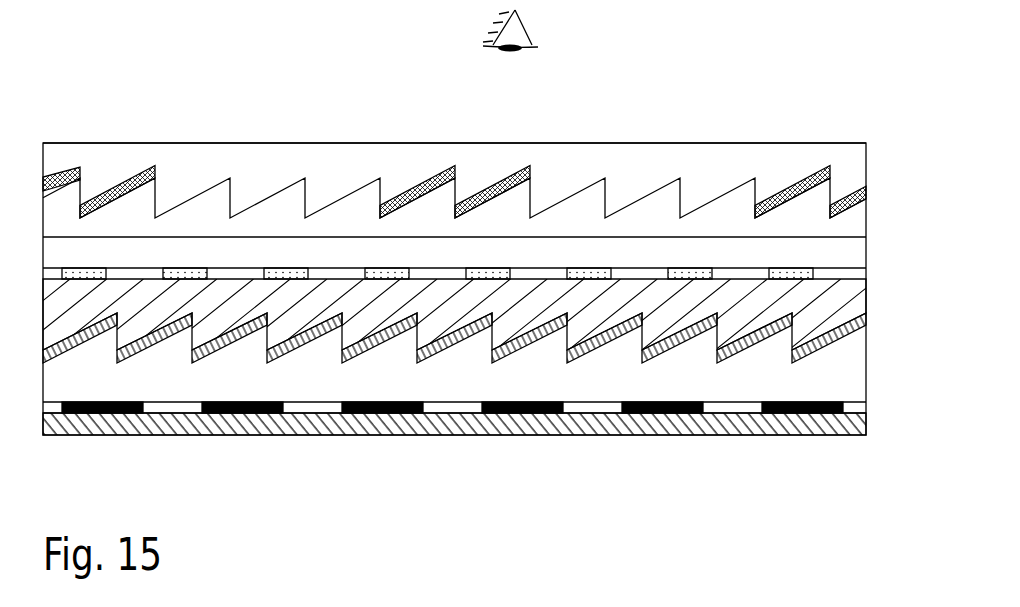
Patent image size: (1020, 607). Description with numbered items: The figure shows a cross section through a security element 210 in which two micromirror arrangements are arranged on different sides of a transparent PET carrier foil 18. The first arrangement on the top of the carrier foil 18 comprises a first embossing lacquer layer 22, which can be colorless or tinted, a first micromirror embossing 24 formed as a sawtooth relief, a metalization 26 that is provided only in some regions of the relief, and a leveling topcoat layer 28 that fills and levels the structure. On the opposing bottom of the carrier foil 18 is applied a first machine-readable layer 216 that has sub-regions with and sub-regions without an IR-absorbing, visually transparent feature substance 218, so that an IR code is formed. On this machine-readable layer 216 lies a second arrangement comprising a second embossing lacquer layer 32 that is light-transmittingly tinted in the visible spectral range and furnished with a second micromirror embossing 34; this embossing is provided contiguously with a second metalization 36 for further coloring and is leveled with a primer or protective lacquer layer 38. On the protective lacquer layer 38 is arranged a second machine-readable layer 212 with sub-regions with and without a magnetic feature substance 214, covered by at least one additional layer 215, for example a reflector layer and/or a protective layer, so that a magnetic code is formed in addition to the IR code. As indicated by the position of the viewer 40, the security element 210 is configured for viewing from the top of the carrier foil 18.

The security element 210 is at (105, 68).
The viewer 40 is at (523, 20).
The leveling topcoat layer 28 is at (855, 173).
The first embossing lacquer layer 22 is at (855, 218).
The first micromirror embossing 24 is at (186, 199).
The metalization 26 is at (113, 183).
The transparent PET carrier foil 18 is at (855, 248).
The IR-absorbing, visually transparent feature substance 218 is at (77, 266).
The first machine-readable layer 216 is at (855, 275).
The second embossing lacquer layer 32 is at (855, 304).
The protective lacquer layer 38 is at (482, 403).
The second metalization 36 is at (160, 344).
The second micromirror embossing 34 is at (238, 343).
The magnetic feature substance 214 is at (832, 400).
The additional layer 215 is at (672, 424).
The second machine-readable layer 212 is at (855, 409).